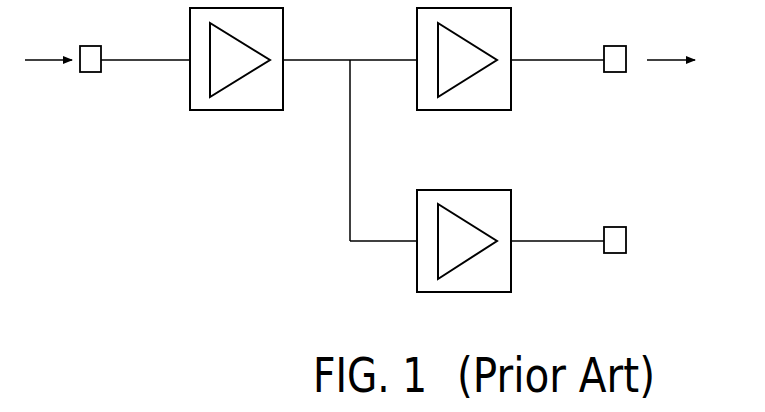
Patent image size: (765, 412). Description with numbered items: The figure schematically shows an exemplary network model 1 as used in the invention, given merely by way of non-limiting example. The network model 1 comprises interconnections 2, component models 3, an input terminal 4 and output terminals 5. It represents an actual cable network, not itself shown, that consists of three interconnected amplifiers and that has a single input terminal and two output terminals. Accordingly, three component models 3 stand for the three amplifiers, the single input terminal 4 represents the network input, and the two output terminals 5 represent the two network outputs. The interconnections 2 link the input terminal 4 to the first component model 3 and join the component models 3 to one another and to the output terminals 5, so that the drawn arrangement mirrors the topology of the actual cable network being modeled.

The network model 1 is at (360, 177).
The interconnections 2 is at (144, 58).
The component models 3 is at (235, 111).
The input terminal 4 is at (90, 73).
The output terminals 5 is at (617, 73).